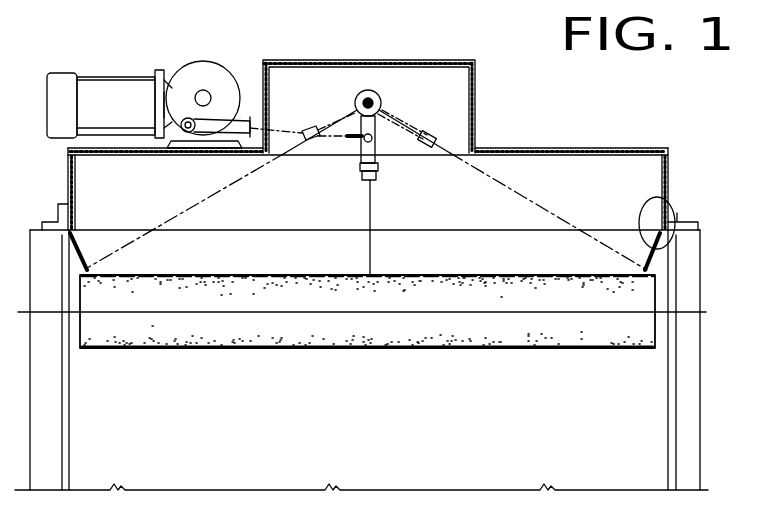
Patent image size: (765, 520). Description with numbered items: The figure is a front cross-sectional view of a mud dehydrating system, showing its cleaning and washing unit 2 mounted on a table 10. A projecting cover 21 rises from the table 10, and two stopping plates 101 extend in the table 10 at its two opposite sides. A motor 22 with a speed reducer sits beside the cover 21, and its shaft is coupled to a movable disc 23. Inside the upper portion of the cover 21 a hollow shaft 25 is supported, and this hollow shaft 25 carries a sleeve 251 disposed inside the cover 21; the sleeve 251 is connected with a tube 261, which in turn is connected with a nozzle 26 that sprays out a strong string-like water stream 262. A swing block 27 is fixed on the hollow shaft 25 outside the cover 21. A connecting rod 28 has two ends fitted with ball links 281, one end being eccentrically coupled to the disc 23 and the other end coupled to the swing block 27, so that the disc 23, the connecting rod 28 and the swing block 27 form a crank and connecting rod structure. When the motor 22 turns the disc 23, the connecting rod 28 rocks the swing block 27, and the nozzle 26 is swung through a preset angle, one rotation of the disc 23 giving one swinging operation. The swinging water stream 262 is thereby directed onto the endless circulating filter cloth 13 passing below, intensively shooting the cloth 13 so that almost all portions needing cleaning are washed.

The cleaning and washing unit 2 is at (613, 115).
The table 10 is at (676, 350).
The endless circulating filter cloth 13 is at (648, 258).
The stopping plate 101 is at (665, 193).
The projecting cover 21 is at (477, 103).
The motor 22 is at (182, 64).
The movable disc 23 is at (226, 74).
The hollow shaft 25 is at (383, 92).
The sleeve 251 is at (362, 88).
The nozzle 26 is at (356, 166).
The tube 261 is at (378, 123).
The water stream 262 is at (368, 253).
The swing block 27 is at (387, 118).
The connecting rod 28 is at (248, 150).
The ball link 281 is at (191, 140).